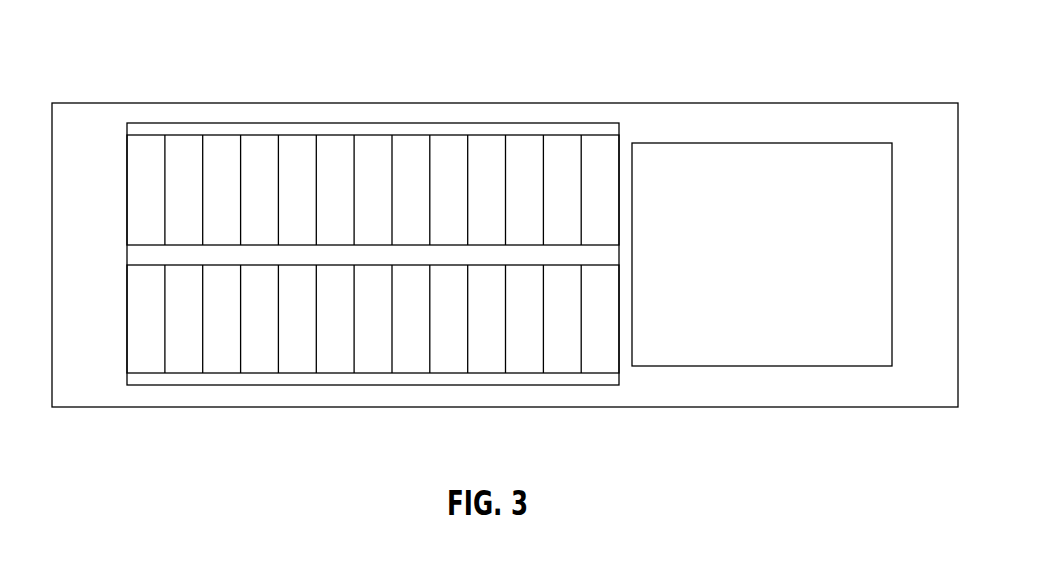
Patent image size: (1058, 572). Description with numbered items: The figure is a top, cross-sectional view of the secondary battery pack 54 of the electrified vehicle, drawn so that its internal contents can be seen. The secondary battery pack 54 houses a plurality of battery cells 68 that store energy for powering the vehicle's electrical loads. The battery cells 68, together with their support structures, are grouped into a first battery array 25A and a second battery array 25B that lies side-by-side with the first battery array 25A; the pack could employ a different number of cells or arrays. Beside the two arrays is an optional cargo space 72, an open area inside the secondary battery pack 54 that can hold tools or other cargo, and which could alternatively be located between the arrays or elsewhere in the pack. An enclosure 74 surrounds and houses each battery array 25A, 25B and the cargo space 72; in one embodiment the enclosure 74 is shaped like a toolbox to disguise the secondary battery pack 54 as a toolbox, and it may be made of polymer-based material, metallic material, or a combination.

The secondary battery pack 54 is at (698, 37).
The enclosure 74 is at (85, 118).
The first battery array 25A is at (255, 161).
The second battery array 25B is at (295, 345).
The battery cells 68 is at (289, 157).
The cargo space 72 is at (777, 267).